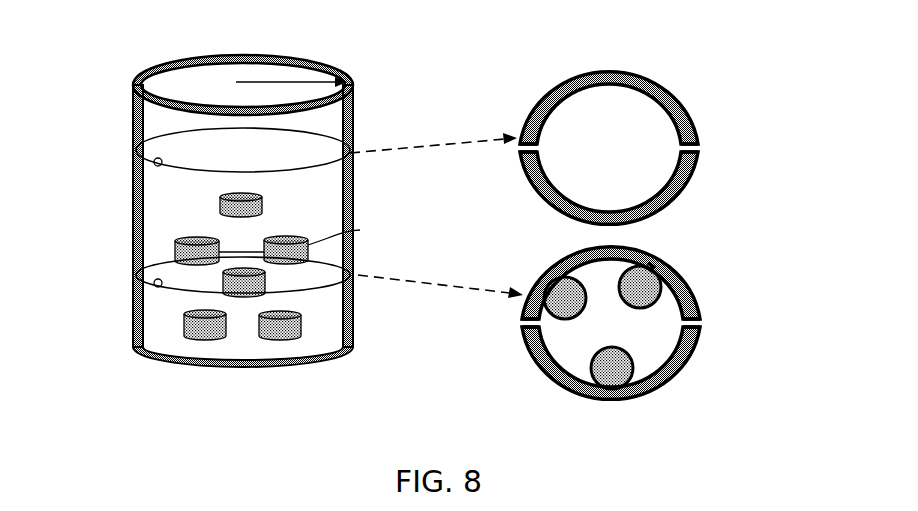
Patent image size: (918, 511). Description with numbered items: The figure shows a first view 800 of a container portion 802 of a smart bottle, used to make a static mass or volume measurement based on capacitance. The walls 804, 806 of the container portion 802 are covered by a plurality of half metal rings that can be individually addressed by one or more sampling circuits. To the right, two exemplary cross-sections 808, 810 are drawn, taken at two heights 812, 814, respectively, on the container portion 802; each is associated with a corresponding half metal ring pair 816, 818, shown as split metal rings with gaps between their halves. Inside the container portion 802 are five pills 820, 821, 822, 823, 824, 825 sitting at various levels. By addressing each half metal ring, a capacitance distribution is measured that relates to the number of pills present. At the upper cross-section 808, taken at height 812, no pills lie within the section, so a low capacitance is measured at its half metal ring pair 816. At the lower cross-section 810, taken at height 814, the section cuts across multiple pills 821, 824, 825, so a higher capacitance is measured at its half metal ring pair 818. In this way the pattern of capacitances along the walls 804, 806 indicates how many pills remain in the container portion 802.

The first view 800 is at (388, 223).
The container portion 802 is at (148, 355).
The wall 804 is at (136, 117).
The wall 806 is at (353, 110).
The cross-section 808 is at (641, 126).
The cross-section 810 is at (643, 313).
The height 812 is at (155, 164).
The height 814 is at (157, 287).
The half metal ring pair 816 is at (694, 153).
The half metal ring pair 818 is at (701, 328).
The pill 820 is at (219, 206).
The pill 821 is at (176, 253).
The pill 822 is at (200, 338).
The pill 823 is at (293, 338).
The pill 824 is at (266, 282).
The pill 825 is at (360, 230).